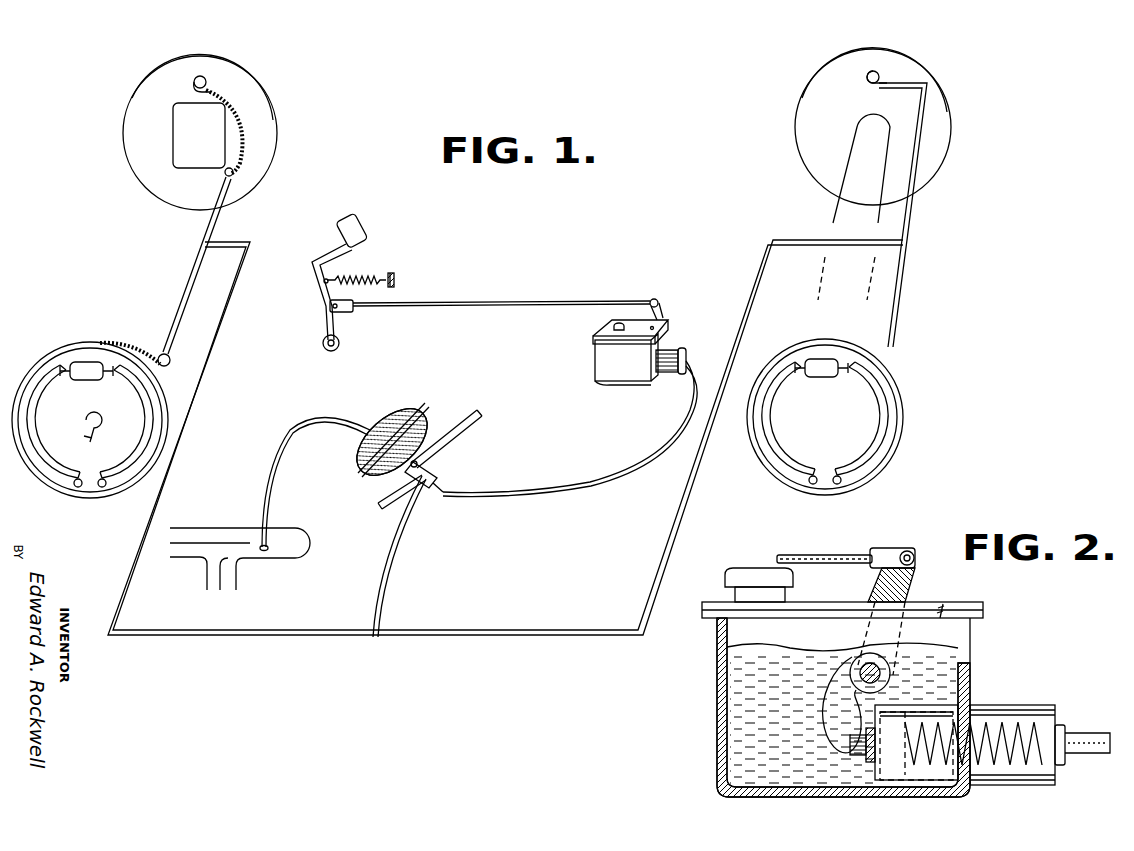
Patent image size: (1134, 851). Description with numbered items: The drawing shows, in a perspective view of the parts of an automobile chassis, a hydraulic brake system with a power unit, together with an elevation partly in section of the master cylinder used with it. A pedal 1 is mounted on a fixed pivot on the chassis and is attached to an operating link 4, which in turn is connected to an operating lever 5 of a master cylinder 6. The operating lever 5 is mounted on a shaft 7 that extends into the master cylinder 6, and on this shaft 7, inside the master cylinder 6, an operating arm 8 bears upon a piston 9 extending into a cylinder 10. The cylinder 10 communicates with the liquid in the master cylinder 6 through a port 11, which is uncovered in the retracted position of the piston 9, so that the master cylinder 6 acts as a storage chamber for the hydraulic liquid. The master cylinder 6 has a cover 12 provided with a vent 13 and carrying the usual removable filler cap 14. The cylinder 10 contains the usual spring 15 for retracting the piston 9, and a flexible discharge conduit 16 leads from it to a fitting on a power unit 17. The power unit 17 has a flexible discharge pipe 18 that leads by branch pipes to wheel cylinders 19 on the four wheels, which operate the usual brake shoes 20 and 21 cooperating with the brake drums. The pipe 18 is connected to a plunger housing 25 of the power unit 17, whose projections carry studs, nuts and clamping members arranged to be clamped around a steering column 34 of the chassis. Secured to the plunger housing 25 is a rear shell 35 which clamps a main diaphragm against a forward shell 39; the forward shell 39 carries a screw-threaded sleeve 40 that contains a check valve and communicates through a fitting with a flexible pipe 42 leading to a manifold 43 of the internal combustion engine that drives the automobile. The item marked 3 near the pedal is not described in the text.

In FIG. 1, the pedal 1 is at (362, 226).
In FIG. 1, the pedal pivot 3 is at (322, 343).
In FIG. 1, the operating link 4 is at (505, 303).
In FIG. 2, the operating link 4 is at (822, 554).
In FIG. 1, the operating lever 5 is at (660, 307).
In FIG. 2, the operating lever 5 is at (913, 572).
In FIG. 1, the master cylinder 6 is at (594, 359).
In FIG. 2, the master cylinder 6 is at (716, 685).
In FIG. 2, the shaft 7 is at (858, 670).
In FIG. 2, the operating arm 8 is at (826, 702).
In FIG. 2, the piston 9 is at (852, 757).
In FIG. 1, the cylinder 10 is at (668, 373).
In FIG. 2, the cylinder 10 is at (1052, 710).
In FIG. 2, the port 11 is at (930, 710).
In FIG. 1, the cover 12 is at (604, 326).
In FIG. 2, the cover 12 is at (830, 605).
In FIG. 1, the vent 13 is at (654, 328).
In FIG. 2, the vent 13 is at (940, 618).
In FIG. 2, the filler cap 14 is at (730, 572).
In FIG. 2, the spring 15 is at (1000, 710).
In FIG. 1, the flexible discharge conduit 16 is at (592, 484).
In FIG. 2, the flexible discharge conduit 16 is at (1088, 733).
In FIG. 1, the power unit 17 is at (380, 429).
In FIG. 1, the flexible discharge pipe 18 is at (388, 555).
In FIG. 1, the wheel cylinders 19 is at (88, 381).
In FIG. 1, the brake shoe 20 is at (62, 420).
In FIG. 1, the brake shoe 21 is at (146, 420).
In FIG. 1, the plunger housing 25 is at (438, 472).
In FIG. 1, the steering column 34 is at (466, 425).
In FIG. 1, the rear shell 35 is at (380, 478).
In FIG. 1, the forward shell 39 is at (364, 458).
In FIG. 1, the screw-threaded sleeve 40 is at (372, 426).
In FIG. 1, the flexible pipe 42 is at (275, 456).
In FIG. 1, the manifold 43 is at (232, 530).